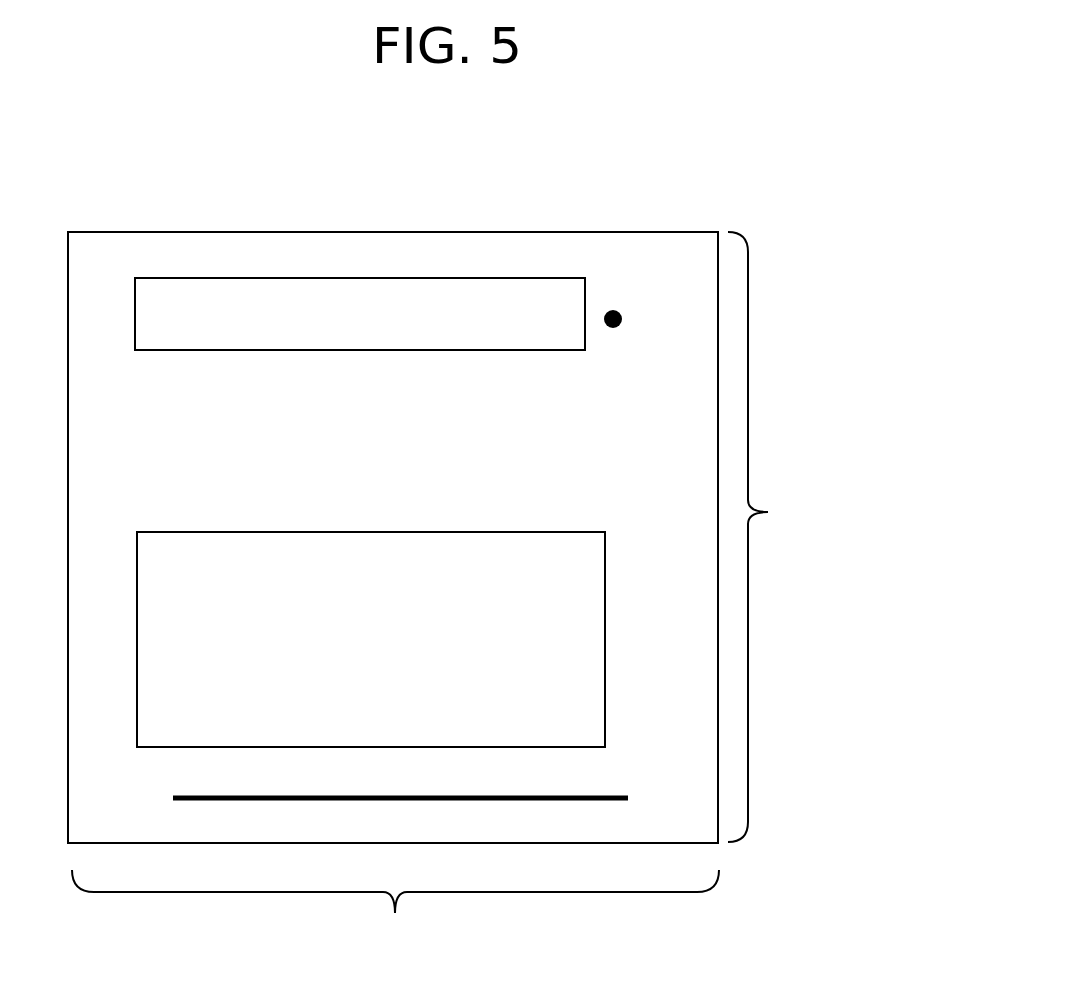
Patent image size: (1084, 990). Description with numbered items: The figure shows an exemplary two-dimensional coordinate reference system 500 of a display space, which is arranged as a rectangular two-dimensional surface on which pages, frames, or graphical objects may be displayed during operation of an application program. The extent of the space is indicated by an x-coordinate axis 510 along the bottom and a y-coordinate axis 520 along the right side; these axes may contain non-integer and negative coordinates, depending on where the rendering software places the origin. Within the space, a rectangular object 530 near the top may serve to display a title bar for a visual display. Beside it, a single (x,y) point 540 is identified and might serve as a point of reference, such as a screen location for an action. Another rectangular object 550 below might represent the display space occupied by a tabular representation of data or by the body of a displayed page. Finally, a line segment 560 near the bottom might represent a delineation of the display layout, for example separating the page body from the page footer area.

The two-dimensional coordinate reference system 500 is at (472, 162).
The x-coordinate axis 510 is at (395, 925).
The y-coordinate axis 520 is at (839, 537).
The rectangular object 530 is at (360, 314).
The point 540 is at (638, 338).
The rectangular object 550 is at (371, 639).
The line segment 560 is at (433, 802).